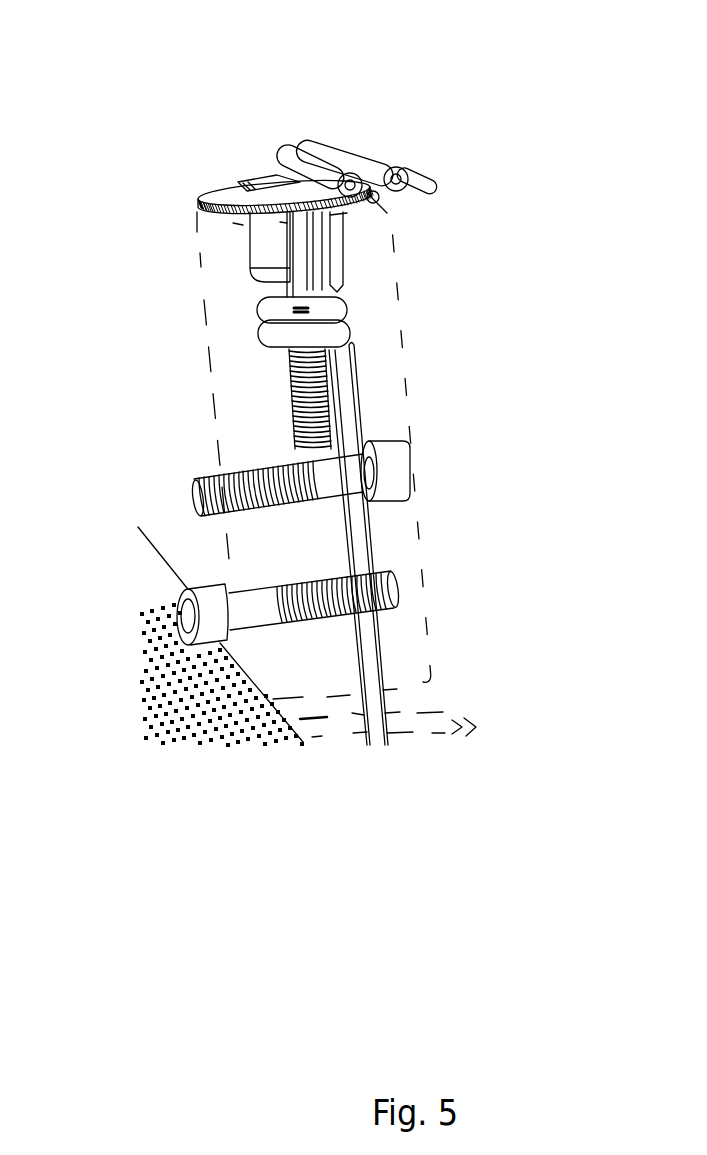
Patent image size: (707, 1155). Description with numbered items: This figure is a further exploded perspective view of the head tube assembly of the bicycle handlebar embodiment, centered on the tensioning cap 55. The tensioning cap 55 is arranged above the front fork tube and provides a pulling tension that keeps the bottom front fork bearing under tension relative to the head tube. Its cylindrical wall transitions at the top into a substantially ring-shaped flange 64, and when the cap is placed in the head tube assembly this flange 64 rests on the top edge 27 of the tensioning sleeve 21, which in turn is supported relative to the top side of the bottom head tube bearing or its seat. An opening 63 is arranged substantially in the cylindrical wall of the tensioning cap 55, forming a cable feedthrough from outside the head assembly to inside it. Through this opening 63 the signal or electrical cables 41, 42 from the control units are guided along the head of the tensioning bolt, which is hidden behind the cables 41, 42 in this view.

The ring-shaped flange 64 is at (215, 197).
The electrical cable 42 is at (438, 195).
The electrical cable 41 is at (368, 200).
The tensioning cap 55 is at (357, 252).
The opening 63 is at (343, 287).
The top edge 27 is at (217, 220).
The tensioning sleeve 21 is at (403, 537).